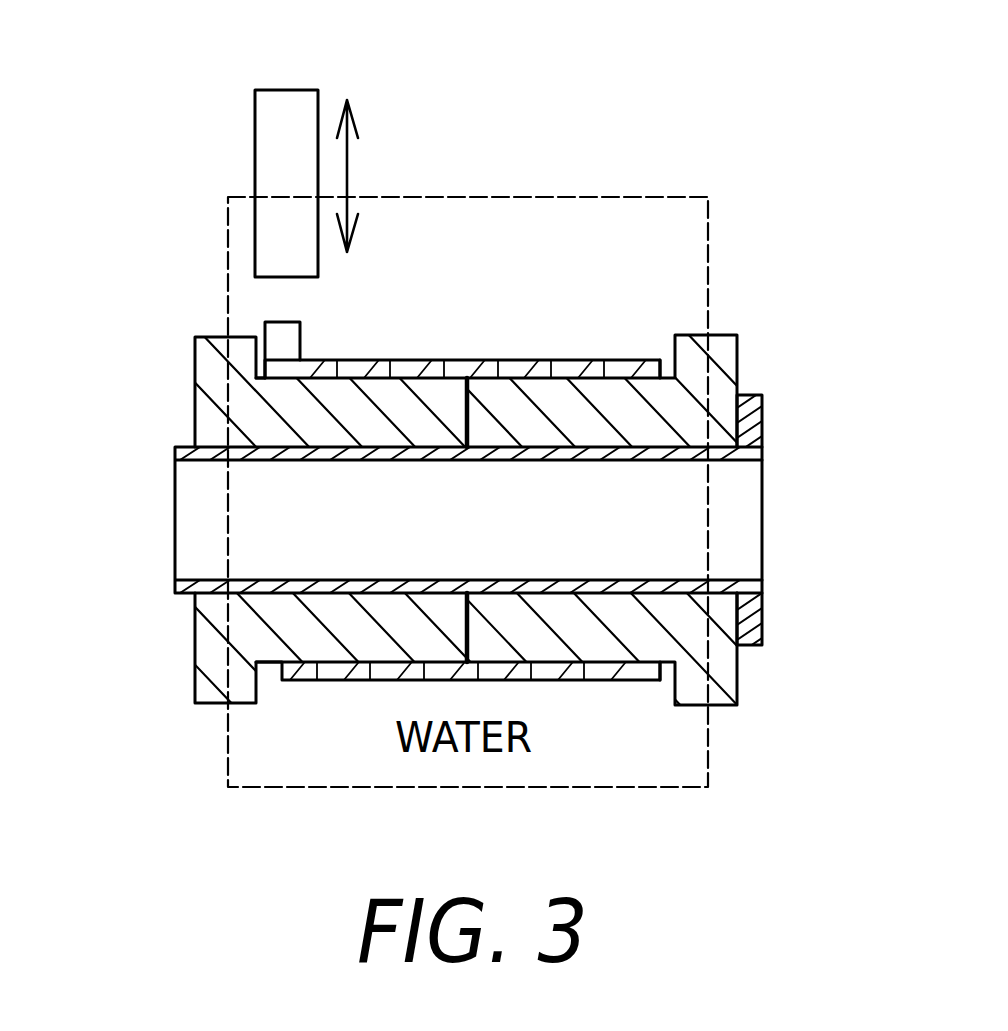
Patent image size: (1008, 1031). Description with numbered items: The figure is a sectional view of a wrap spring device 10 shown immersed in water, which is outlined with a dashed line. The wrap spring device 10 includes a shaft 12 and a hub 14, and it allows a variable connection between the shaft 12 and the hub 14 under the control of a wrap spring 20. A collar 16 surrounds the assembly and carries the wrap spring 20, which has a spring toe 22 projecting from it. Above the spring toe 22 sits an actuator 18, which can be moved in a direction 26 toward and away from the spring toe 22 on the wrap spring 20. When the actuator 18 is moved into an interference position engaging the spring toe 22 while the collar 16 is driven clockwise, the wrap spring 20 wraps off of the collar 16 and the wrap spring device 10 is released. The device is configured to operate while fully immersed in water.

The wrap spring device 10 is at (513, 114).
The shaft 12 is at (735, 522).
The hub 14 is at (720, 665).
The collar 16 is at (213, 393).
The actuator 18 is at (295, 160).
The wrap spring 20 is at (628, 358).
The spring toe 22 is at (282, 333).
The direction 26 is at (382, 176).